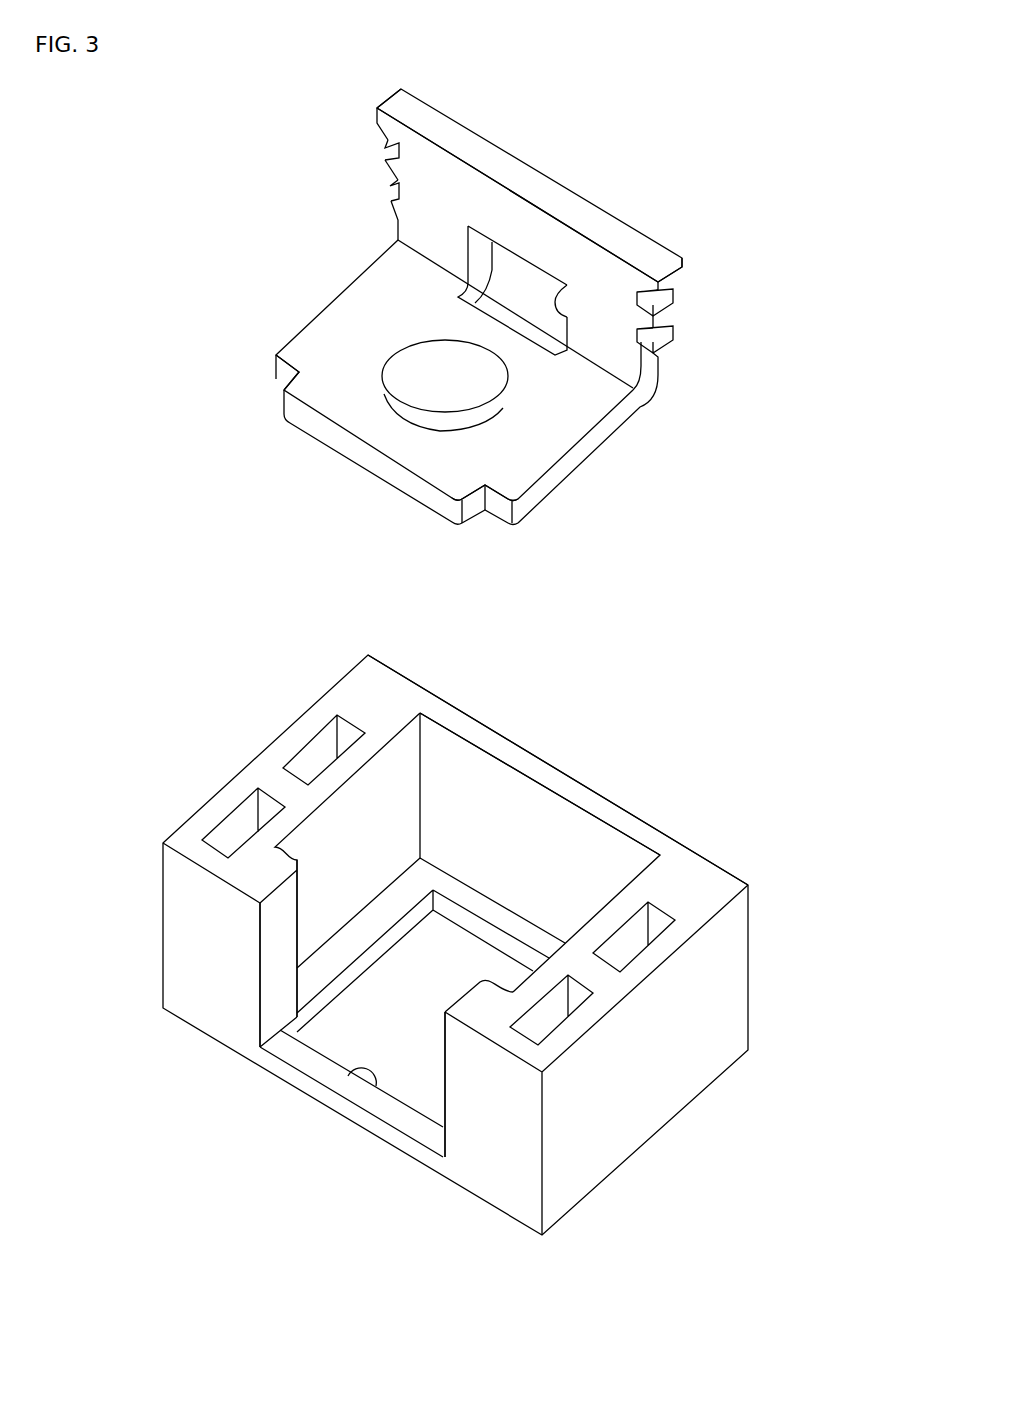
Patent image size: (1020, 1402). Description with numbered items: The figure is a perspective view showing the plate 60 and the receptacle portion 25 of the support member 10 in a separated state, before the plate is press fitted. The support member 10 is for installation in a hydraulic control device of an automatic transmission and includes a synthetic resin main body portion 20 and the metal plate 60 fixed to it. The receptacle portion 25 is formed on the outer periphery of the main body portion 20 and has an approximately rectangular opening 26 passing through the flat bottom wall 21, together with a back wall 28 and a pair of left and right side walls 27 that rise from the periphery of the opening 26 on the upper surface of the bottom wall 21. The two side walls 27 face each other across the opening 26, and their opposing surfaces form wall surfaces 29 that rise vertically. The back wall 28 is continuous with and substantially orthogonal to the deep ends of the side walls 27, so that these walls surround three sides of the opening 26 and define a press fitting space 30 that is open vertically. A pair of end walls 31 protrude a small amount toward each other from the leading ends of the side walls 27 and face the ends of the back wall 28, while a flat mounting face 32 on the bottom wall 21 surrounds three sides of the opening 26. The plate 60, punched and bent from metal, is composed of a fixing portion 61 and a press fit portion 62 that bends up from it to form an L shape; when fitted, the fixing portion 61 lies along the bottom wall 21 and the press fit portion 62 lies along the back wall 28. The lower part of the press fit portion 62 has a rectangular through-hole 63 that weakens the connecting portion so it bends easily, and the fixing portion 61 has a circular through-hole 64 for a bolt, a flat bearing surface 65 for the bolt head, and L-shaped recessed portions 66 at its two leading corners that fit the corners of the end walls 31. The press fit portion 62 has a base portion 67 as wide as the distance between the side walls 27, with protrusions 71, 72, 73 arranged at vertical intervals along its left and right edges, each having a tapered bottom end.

The support member 10 is at (835, 589).
The main body portion 20 is at (750, 968).
The bottom wall 21 is at (306, 1090).
The receptacle portion 25 is at (709, 866).
The opening 26 is at (347, 1077).
The side walls 27 is at (311, 712).
The back wall 28 is at (487, 735).
The wall surfaces 29 is at (388, 790).
The press fitting space 30 is at (643, 872).
The end walls 31 is at (250, 1018).
The mounting face 32 is at (335, 950).
The plate 60 is at (534, 286).
The fixing portion 61 is at (333, 333).
The press fit portion 62 is at (508, 165).
The through-hole 63 is at (556, 293).
The through-hole 64 is at (396, 398).
The bearing surface 65 is at (433, 452).
The recessed portions 66 is at (283, 383).
The base portion 67 is at (554, 243).
The protrusion 71 is at (386, 199).
The protrusion 72 is at (385, 153).
The protrusion 73 is at (374, 107).